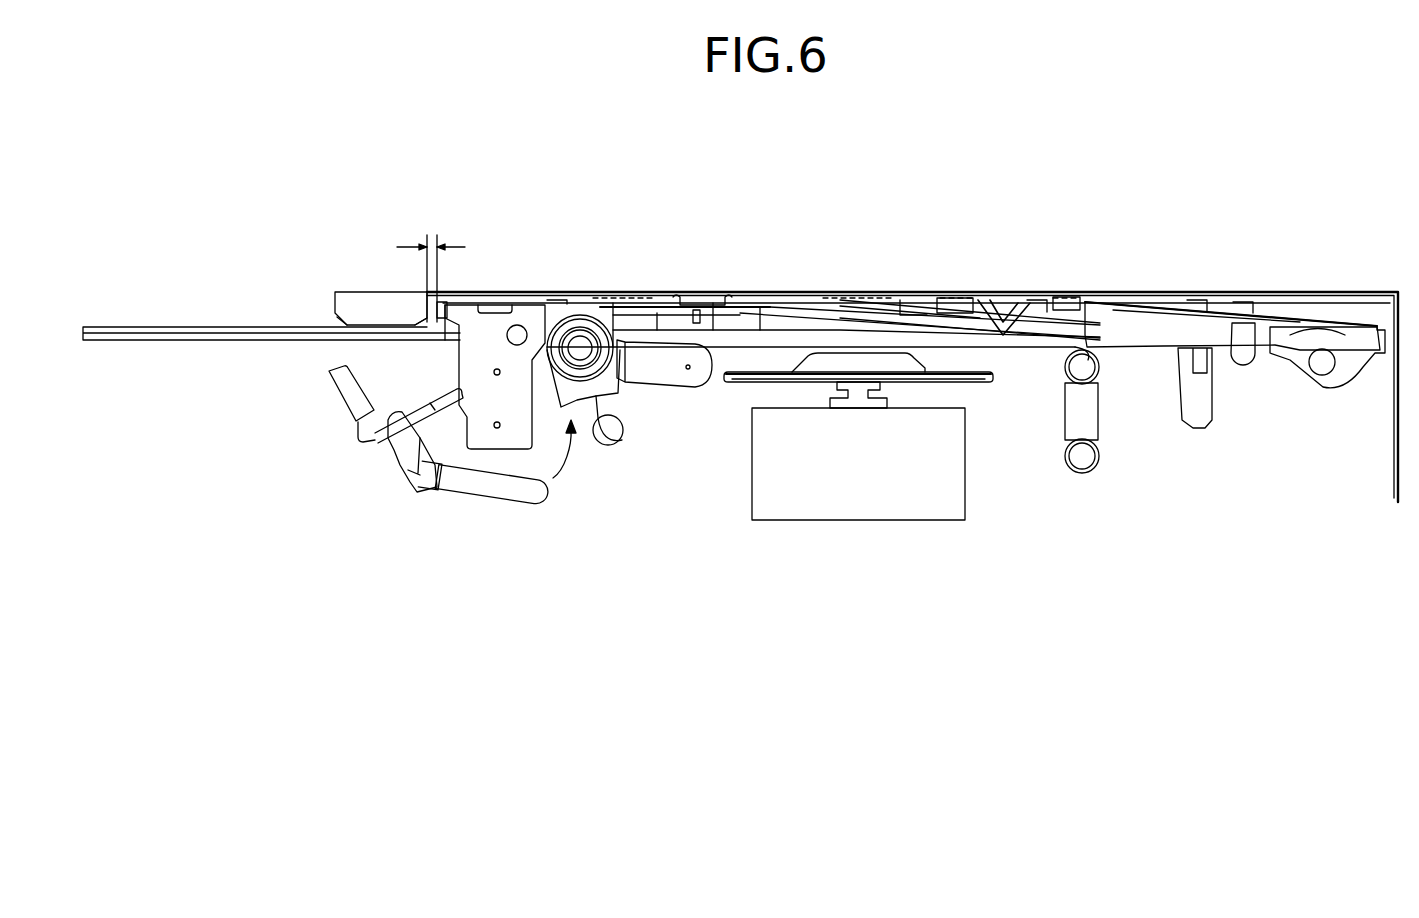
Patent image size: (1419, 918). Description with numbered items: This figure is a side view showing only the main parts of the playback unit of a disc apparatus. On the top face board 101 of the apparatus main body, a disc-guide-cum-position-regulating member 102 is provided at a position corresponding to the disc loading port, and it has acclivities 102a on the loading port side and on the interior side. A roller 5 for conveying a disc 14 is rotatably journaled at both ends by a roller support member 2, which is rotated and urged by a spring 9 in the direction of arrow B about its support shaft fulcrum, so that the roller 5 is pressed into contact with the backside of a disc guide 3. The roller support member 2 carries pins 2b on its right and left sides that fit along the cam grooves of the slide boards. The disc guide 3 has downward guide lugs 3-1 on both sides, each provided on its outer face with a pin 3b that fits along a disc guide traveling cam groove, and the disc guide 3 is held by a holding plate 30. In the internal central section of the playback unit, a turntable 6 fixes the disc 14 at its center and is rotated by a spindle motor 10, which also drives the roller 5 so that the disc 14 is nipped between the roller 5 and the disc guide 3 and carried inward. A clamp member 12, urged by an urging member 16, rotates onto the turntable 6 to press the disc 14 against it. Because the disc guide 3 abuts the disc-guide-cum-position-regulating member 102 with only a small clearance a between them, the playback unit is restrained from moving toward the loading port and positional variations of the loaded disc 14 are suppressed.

The roller support member 2 is at (390, 443).
The pin 2b is at (608, 432).
The disc guide 3 is at (440, 330).
The downward guide lug 3-1 is at (493, 327).
The pin 3b is at (524, 328).
The roller 5 is at (582, 348).
The turntable 6 is at (765, 372).
The spring 9 is at (475, 485).
The spindle motor 10 is at (887, 503).
The clamp member 12 is at (1102, 302).
The disc 14 is at (152, 327).
The urging member 16 is at (1093, 418).
The holding plate 30 is at (447, 300).
The top face board 101 is at (805, 293).
The disc-guide-cum-position-regulating member 102 is at (372, 295).
The acclivity 102a is at (337, 317).
The clearance a is at (427, 235).
The arrow B is at (571, 459).